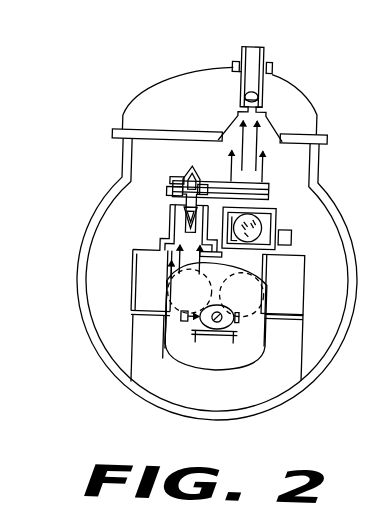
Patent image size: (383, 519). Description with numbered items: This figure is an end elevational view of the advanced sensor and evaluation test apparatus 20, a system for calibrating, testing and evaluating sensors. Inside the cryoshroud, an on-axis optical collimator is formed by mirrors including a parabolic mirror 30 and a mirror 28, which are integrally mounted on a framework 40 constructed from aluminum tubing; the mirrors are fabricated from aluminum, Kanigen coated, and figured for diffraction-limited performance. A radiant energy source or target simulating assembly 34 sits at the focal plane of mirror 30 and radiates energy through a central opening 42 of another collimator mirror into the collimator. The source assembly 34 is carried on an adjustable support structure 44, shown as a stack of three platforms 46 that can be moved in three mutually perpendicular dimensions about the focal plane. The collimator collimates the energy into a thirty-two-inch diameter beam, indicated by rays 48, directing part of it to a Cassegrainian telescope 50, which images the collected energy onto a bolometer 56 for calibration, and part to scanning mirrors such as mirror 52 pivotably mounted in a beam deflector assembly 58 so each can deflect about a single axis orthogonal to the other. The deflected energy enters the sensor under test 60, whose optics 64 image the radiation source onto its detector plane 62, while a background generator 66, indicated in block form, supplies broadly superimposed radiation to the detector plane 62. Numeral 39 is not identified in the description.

The test apparatus 20 is at (131, 85).
The mirror 28 is at (216, 371).
The mirror 30 is at (208, 182).
The radiant energy source assembly 34 is at (171, 329).
The partition wall 39 is at (166, 312).
The framework 40 is at (304, 309).
The central opening 42 is at (241, 319).
The support structure 44 is at (240, 335).
The platforms 46 is at (189, 324).
The rays 48 is at (178, 275).
The Cassegrainian telescope 50 is at (183, 219).
The scanning mirror 52 is at (271, 213).
The bolometer 56 is at (182, 174).
The beam deflector assembly 58 is at (270, 207).
The sensor under test 60 is at (264, 71).
The detector plane 62 is at (261, 32).
The optics 64 is at (239, 92).
The background generator 66 is at (291, 236).